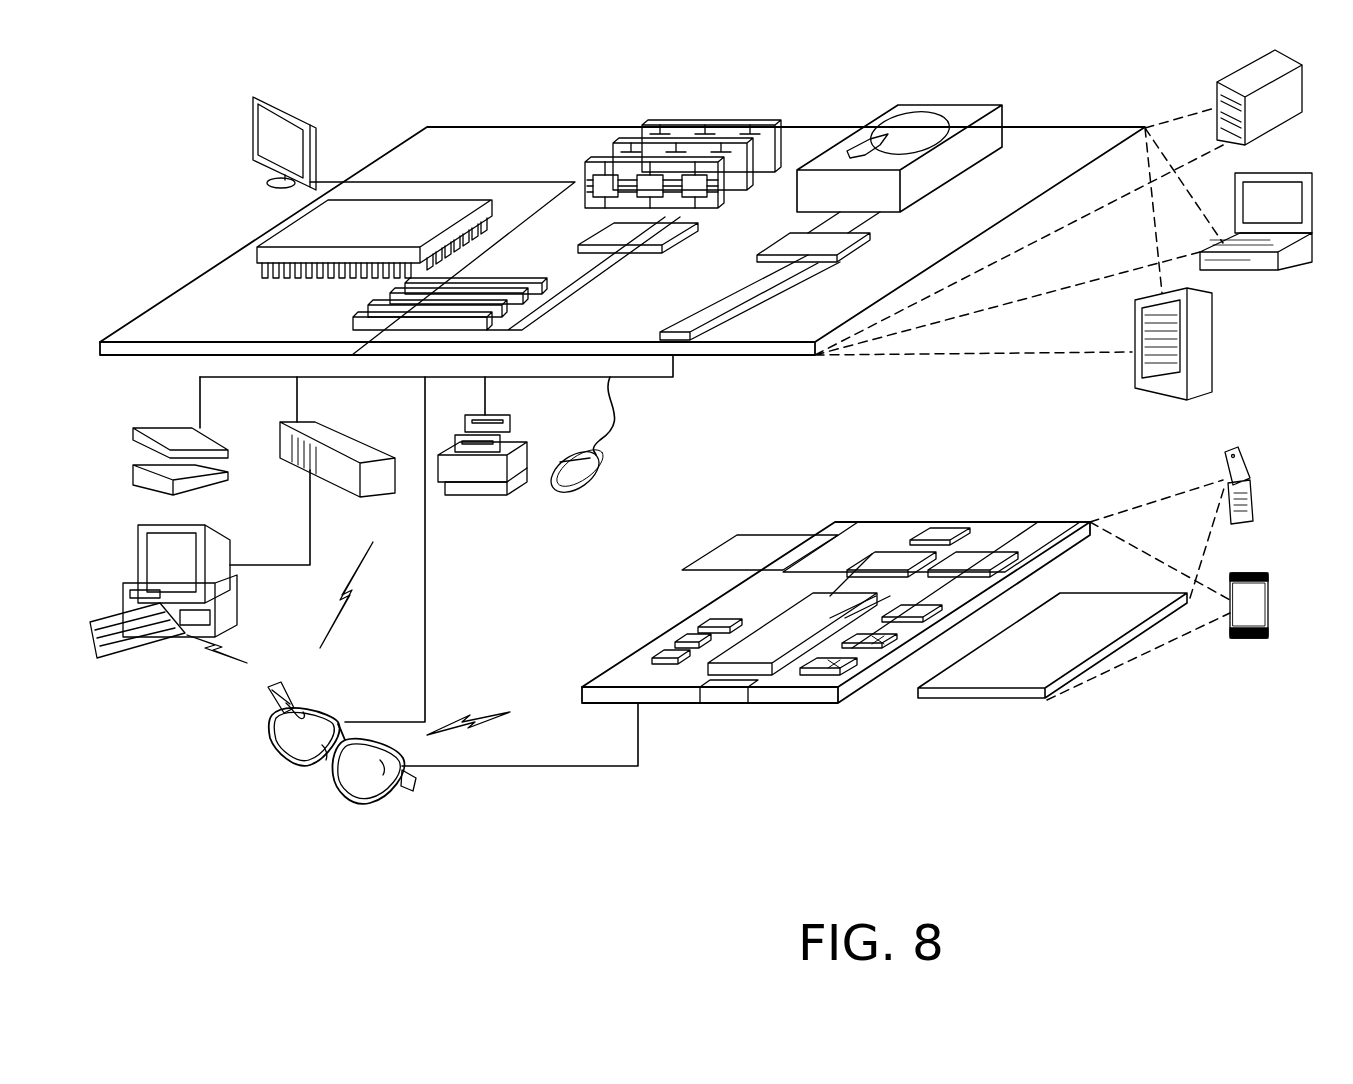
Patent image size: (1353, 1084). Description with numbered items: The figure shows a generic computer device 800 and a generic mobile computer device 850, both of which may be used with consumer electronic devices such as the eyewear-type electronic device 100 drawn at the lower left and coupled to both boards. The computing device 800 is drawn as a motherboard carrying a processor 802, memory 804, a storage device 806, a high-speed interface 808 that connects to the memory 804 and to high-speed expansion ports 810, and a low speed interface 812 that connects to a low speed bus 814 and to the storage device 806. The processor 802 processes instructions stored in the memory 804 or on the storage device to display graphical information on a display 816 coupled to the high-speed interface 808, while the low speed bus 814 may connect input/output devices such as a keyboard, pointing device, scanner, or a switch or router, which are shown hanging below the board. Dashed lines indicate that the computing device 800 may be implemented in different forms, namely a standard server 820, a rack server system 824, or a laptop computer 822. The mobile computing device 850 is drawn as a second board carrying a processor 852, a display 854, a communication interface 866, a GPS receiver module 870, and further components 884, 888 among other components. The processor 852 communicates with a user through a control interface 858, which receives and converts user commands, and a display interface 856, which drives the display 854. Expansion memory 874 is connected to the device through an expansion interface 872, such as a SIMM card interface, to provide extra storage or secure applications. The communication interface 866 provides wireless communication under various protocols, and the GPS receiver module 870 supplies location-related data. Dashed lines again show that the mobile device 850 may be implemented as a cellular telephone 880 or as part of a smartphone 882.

The generic computer device 800 is at (382, 76).
The display 816 is at (259, 97).
The processor 802 is at (284, 227).
The high-speed expansion ports 810 is at (378, 305).
The memory 804 is at (716, 121).
The storage device 806 is at (941, 104).
The high-speed interface 808 is at (653, 236).
The low speed interface 812 is at (791, 250).
The low speed bus 814 is at (681, 330).
The server computer 820 is at (1236, 76).
The laptop computer 822 is at (1292, 174).
The rack server system 824 is at (1213, 342).
The cellular telephone 880 is at (912, 607).
The smartphone 882 is at (727, 695).
The expansion memory 874 is at (739, 535).
The expansion interface 872 is at (820, 532).
The communication interface 866 is at (890, 554).
The GPS receiver module 870 is at (940, 531).
The sensor 888 is at (978, 554).
The electronic components 884 is at (680, 644).
The processor 852 is at (763, 640).
The control interface 858 is at (878, 640).
The display interface 856 is at (846, 662).
The display 854 is at (1089, 602).
The generic mobile computer device 850 is at (1130, 698).
The electronic device 100 is at (412, 799).